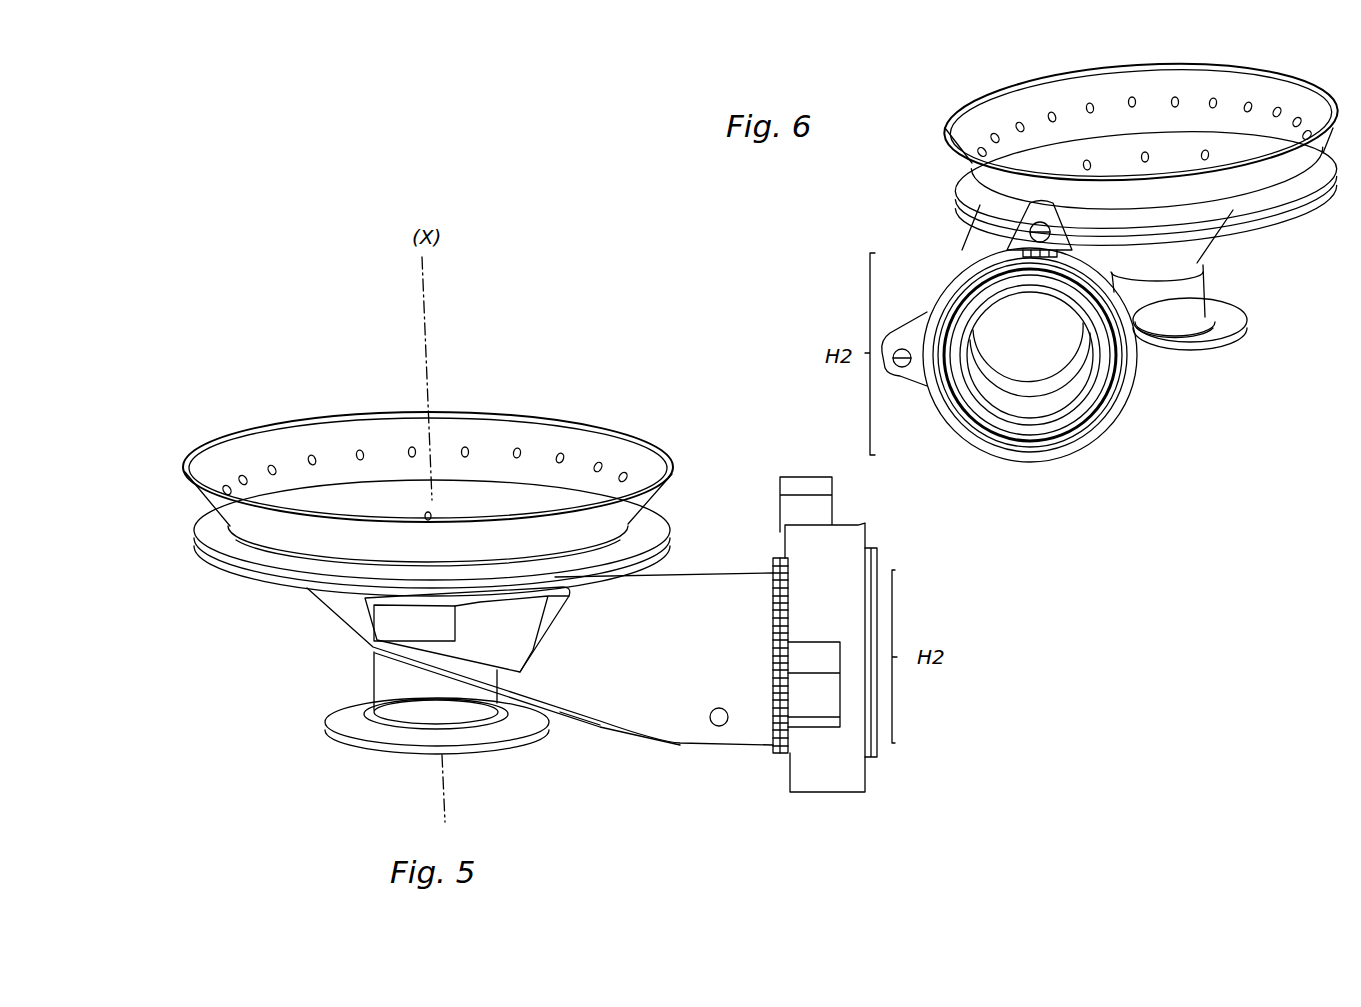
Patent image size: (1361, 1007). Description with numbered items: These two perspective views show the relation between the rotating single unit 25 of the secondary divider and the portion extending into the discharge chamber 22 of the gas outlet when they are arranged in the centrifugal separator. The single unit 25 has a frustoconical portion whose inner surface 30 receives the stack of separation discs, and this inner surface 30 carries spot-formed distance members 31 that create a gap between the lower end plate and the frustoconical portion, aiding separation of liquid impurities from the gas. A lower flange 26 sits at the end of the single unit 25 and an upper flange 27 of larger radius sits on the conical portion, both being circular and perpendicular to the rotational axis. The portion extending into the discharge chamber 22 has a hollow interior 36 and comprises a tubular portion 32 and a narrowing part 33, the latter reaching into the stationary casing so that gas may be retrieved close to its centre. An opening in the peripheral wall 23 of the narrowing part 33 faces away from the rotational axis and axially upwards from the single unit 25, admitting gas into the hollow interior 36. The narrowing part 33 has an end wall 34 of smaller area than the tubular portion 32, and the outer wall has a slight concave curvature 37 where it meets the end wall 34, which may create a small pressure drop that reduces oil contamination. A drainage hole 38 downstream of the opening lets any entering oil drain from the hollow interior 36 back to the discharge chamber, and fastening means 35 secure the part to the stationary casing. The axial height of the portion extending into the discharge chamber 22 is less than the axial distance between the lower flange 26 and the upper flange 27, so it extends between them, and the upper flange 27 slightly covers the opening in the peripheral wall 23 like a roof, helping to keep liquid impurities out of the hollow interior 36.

In FIG. 5, the portion extending into the discharge chamber 22 is at (648, 765).
In FIG. 6, the portion extending into the discharge chamber 22 is at (1153, 453).
In FIG. 5, the opening in the peripheral wall 23 is at (437, 662).
In FIG. 5, the single unit 25 is at (320, 398).
In FIG. 6, the single unit 25 is at (940, 97).
In FIG. 5, the lower flange 26 is at (333, 745).
In FIG. 6, the lower flange 26 is at (1240, 330).
In FIG. 5, the upper flange 27 is at (210, 555).
In FIG. 6, the upper flange 27 is at (1303, 200).
In FIG. 5, the inner surface 30 is at (473, 478).
In FIG. 5, the distance members 31 is at (406, 432).
In FIG. 5, the tubular portion 32 is at (725, 600).
In FIG. 5, the narrowing part 33 is at (577, 697).
In FIG. 5, the end wall 34 is at (365, 630).
In FIG. 5, the fastening means 35 is at (800, 485).
In FIG. 6, the hollow interior 36 is at (1037, 357).
In FIG. 5, the curvature 37 is at (375, 660).
In FIG. 5, the drainage hole 38 is at (719, 726).